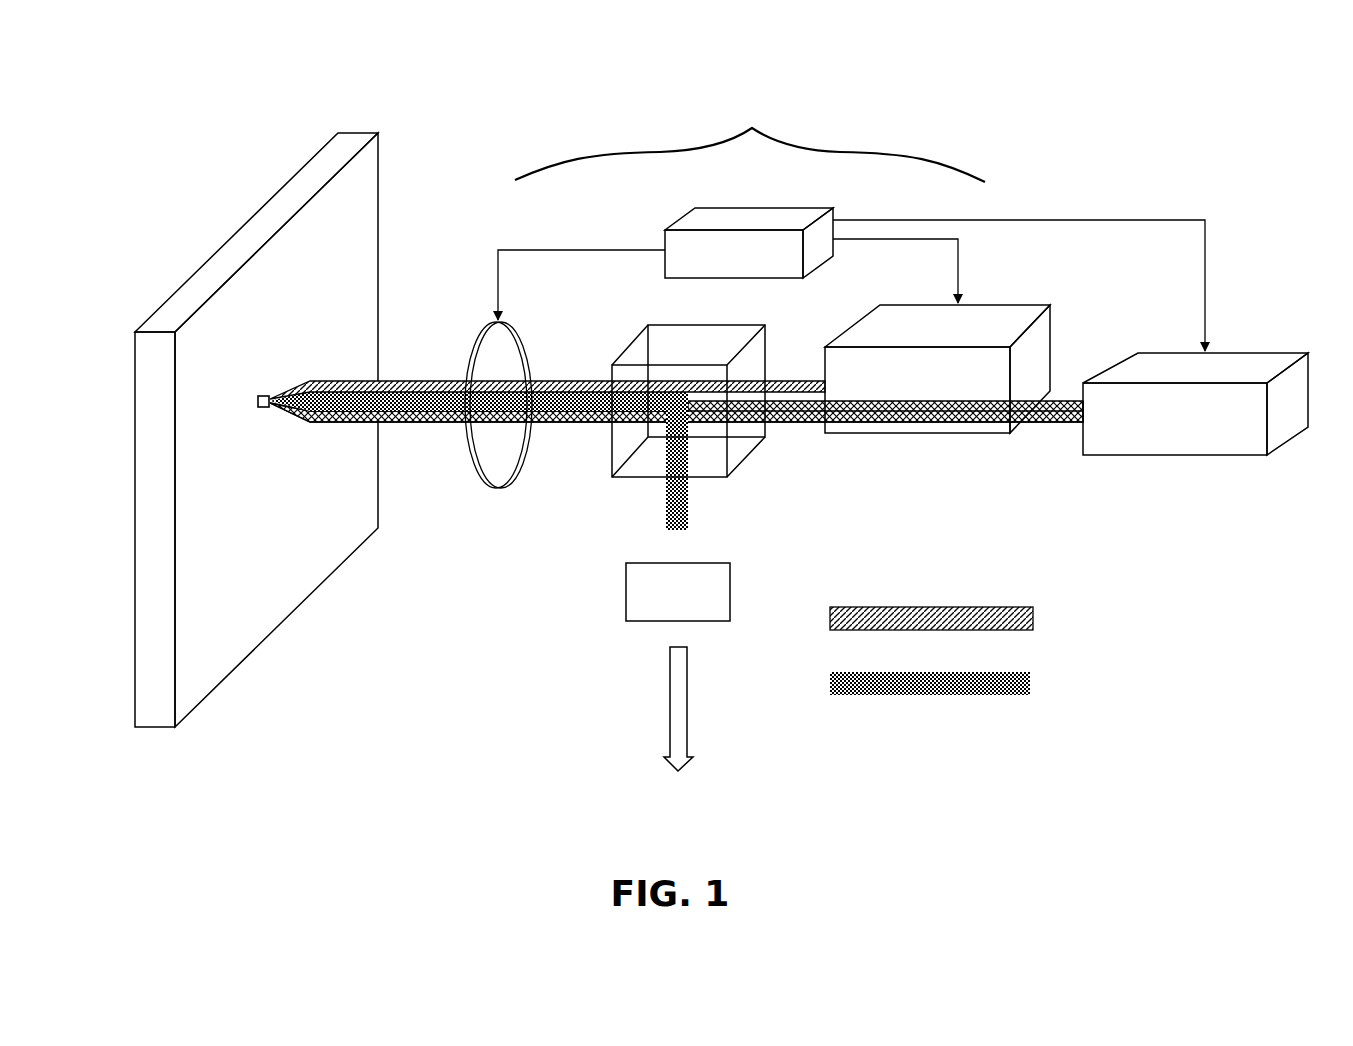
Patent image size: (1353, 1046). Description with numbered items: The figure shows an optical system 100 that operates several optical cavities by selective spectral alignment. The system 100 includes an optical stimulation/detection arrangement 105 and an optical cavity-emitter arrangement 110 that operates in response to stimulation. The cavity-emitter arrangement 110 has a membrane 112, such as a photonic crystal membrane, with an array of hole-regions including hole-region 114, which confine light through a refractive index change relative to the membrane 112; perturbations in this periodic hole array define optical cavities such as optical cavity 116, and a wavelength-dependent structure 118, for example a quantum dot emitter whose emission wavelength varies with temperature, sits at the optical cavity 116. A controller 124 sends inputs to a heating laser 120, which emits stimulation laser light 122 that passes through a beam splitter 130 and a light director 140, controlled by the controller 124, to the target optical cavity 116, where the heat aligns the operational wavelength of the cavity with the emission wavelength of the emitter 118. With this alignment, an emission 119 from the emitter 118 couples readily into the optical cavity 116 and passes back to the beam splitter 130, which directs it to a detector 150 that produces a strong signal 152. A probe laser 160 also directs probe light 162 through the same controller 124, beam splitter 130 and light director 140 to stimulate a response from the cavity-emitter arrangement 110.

The optical system 100 is at (1066, 47).
The optical stimulation/detection arrangement 105 is at (750, 140).
The optical cavity-emitter arrangement 110 is at (384, 109).
The membrane 112 is at (315, 168).
The hole-region 114 is at (365, 173).
The optical cavity 116 is at (263, 383).
The wavelength-dependent structure 118 is at (257, 402).
The emission 119 is at (690, 517).
The heating laser 120 is at (992, 305).
The stimulation laser light 122 is at (553, 381).
The controller 124 is at (755, 212).
The beam splitter 130 is at (737, 327).
The light director 140 is at (510, 326).
The detector 150 is at (736, 580).
The signal 152 is at (670, 700).
The probe laser 160 is at (1255, 352).
The probe light 162 is at (1020, 430).